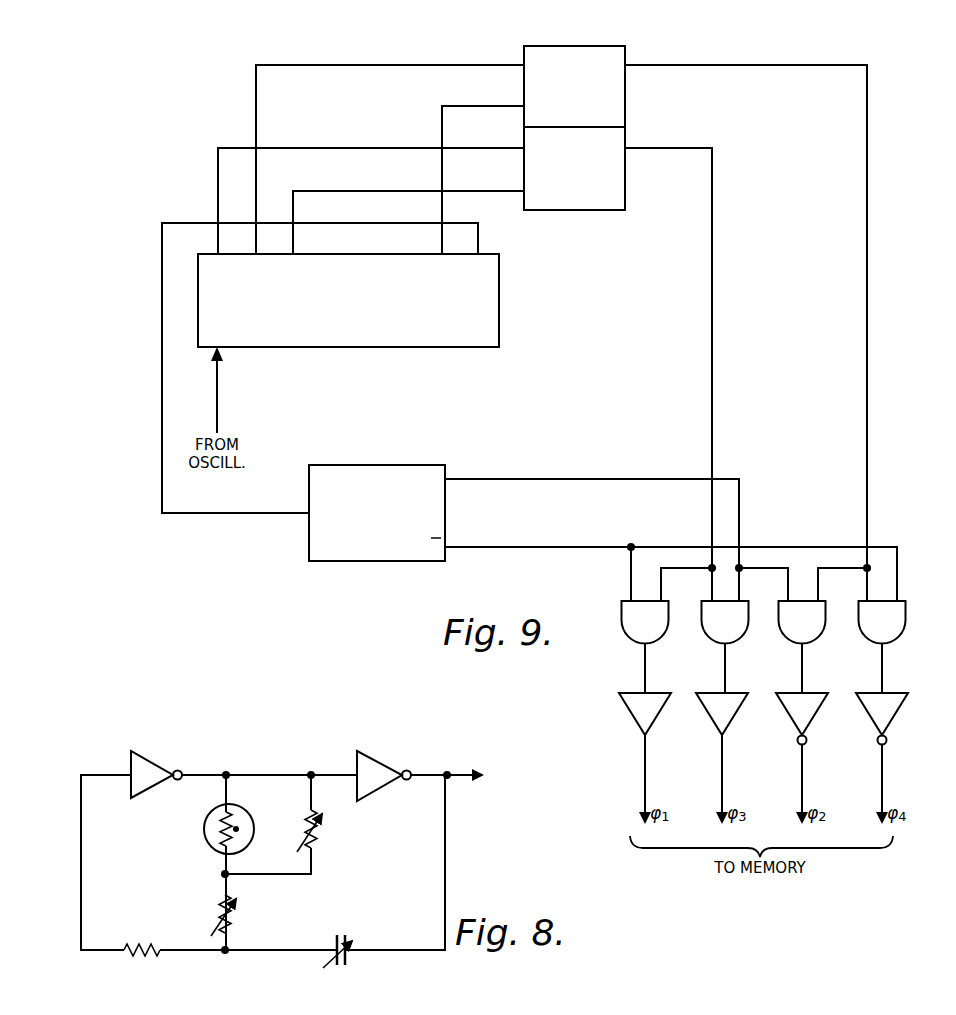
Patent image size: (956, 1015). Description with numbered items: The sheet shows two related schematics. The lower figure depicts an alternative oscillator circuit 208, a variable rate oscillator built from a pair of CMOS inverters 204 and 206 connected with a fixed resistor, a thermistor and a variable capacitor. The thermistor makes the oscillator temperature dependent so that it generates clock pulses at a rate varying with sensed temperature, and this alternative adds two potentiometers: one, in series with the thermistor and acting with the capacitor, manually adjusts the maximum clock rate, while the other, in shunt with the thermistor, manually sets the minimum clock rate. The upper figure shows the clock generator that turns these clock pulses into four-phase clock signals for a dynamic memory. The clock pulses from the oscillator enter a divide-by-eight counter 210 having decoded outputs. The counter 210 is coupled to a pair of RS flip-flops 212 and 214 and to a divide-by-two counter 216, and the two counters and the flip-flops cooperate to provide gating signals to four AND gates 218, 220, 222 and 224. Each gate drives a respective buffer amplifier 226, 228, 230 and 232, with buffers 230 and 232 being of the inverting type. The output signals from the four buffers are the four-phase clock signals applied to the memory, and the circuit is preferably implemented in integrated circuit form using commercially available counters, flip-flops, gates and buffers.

In FIG. 8, the CMOS inverter 204 is at (141, 765).
In FIG. 8, the CMOS inverter 206 is at (362, 766).
In FIG. 8, the alternative oscillator circuit 208 is at (176, 962).
In FIG. 9, the divide-by-8 counter 210 is at (500, 296).
In FIG. 9, the RS flip-flop 212 is at (612, 48).
In FIG. 9, the RS flip-flop 214 is at (614, 193).
In FIG. 9, the divide-by-2 counter 216 is at (400, 466).
In FIG. 9, the AND gate 218 is at (630, 627).
In FIG. 9, the AND gate 220 is at (708, 627).
In FIG. 9, the AND gate 222 is at (787, 627).
In FIG. 9, the AND gate 224 is at (869, 627).
In FIG. 9, the buffer amplifier 226 is at (632, 718).
In FIG. 9, the buffer amplifier 228 is at (710, 718).
In FIG. 9, the inverting buffer 230 is at (789, 718).
In FIG. 9, the inverting buffer 232 is at (868, 718).